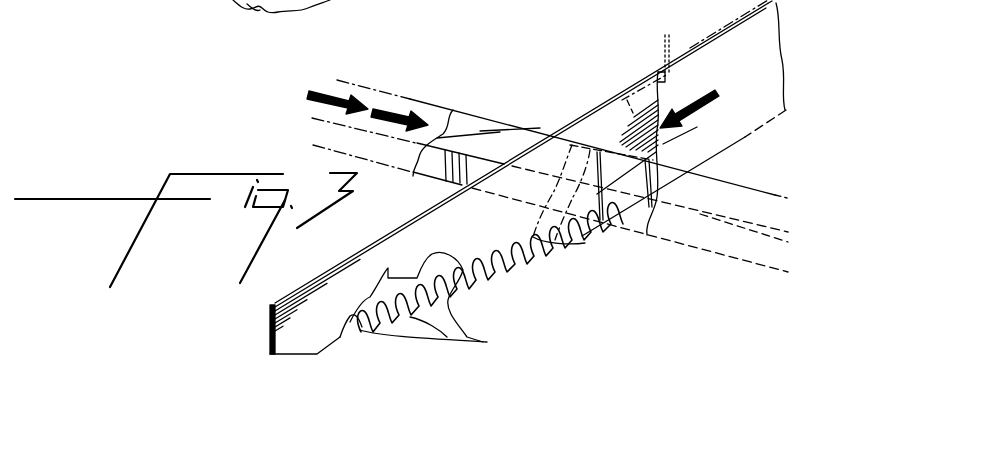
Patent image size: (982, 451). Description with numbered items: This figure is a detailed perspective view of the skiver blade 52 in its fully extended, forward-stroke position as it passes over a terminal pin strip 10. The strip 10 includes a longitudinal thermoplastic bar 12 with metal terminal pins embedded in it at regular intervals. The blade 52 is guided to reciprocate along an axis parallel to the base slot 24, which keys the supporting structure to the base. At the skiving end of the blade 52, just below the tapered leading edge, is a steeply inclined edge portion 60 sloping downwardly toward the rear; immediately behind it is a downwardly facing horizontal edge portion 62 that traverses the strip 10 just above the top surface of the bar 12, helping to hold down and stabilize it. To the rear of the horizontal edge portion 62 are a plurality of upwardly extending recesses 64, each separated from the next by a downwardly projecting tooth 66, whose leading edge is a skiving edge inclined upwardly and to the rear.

The terminal pin strip 10 is at (479, 96).
The thermoplastic bar 12 is at (420, 160).
The base slot 24 is at (222, 0).
The skiver blade 52 is at (596, 122).
The steeply inclined edge portion 60 is at (292, 356).
The horizontal edge portion 62 is at (330, 348).
The recesses 64 is at (390, 265).
The tooth 66 is at (487, 342).